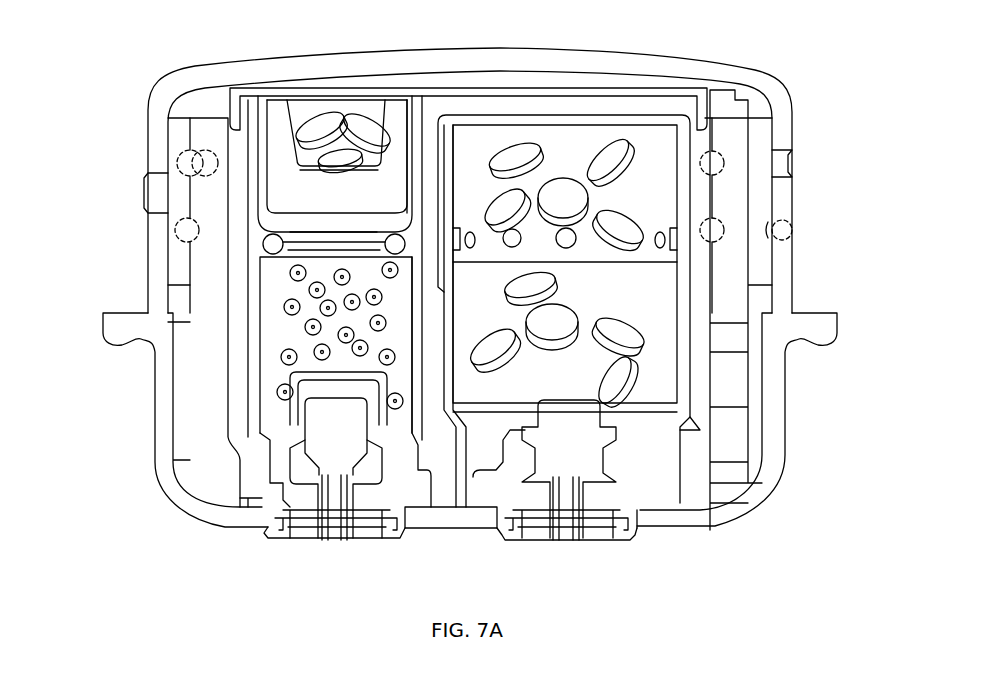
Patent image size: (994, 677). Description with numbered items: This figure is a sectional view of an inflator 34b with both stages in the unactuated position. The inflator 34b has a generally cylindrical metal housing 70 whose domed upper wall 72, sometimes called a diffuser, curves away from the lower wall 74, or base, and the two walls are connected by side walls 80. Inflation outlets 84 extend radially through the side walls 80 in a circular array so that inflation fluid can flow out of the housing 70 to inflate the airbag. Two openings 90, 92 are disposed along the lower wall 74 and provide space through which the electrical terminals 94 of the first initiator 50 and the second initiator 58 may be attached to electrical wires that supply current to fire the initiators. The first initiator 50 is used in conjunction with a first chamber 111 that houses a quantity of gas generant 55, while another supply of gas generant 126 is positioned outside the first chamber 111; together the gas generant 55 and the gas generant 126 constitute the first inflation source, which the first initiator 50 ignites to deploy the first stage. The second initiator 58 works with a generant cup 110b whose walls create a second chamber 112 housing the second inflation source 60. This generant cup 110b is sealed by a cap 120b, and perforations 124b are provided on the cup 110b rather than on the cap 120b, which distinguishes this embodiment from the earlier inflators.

The inflator 34b is at (785, 74).
The upper wall 72 is at (495, 58).
The housing 70 is at (785, 196).
The inflation outlets 84 is at (152, 192).
The side walls 80 is at (162, 362).
The cap 120b is at (605, 116).
The generant cup 110b is at (683, 385).
The gas generant 126 is at (368, 122).
The first chamber 111 is at (283, 333).
The gas generant 55 is at (282, 358).
The second chamber 112 is at (656, 317).
The perforations 124b is at (569, 241).
The second inflation source 60 is at (614, 170).
The first initiator 50 is at (324, 456).
The second initiator 58 is at (556, 456).
The electrical terminals 94 is at (342, 535).
The opening 90 is at (272, 544).
The lower wall 74 is at (463, 516).
The opening 92 is at (498, 544).